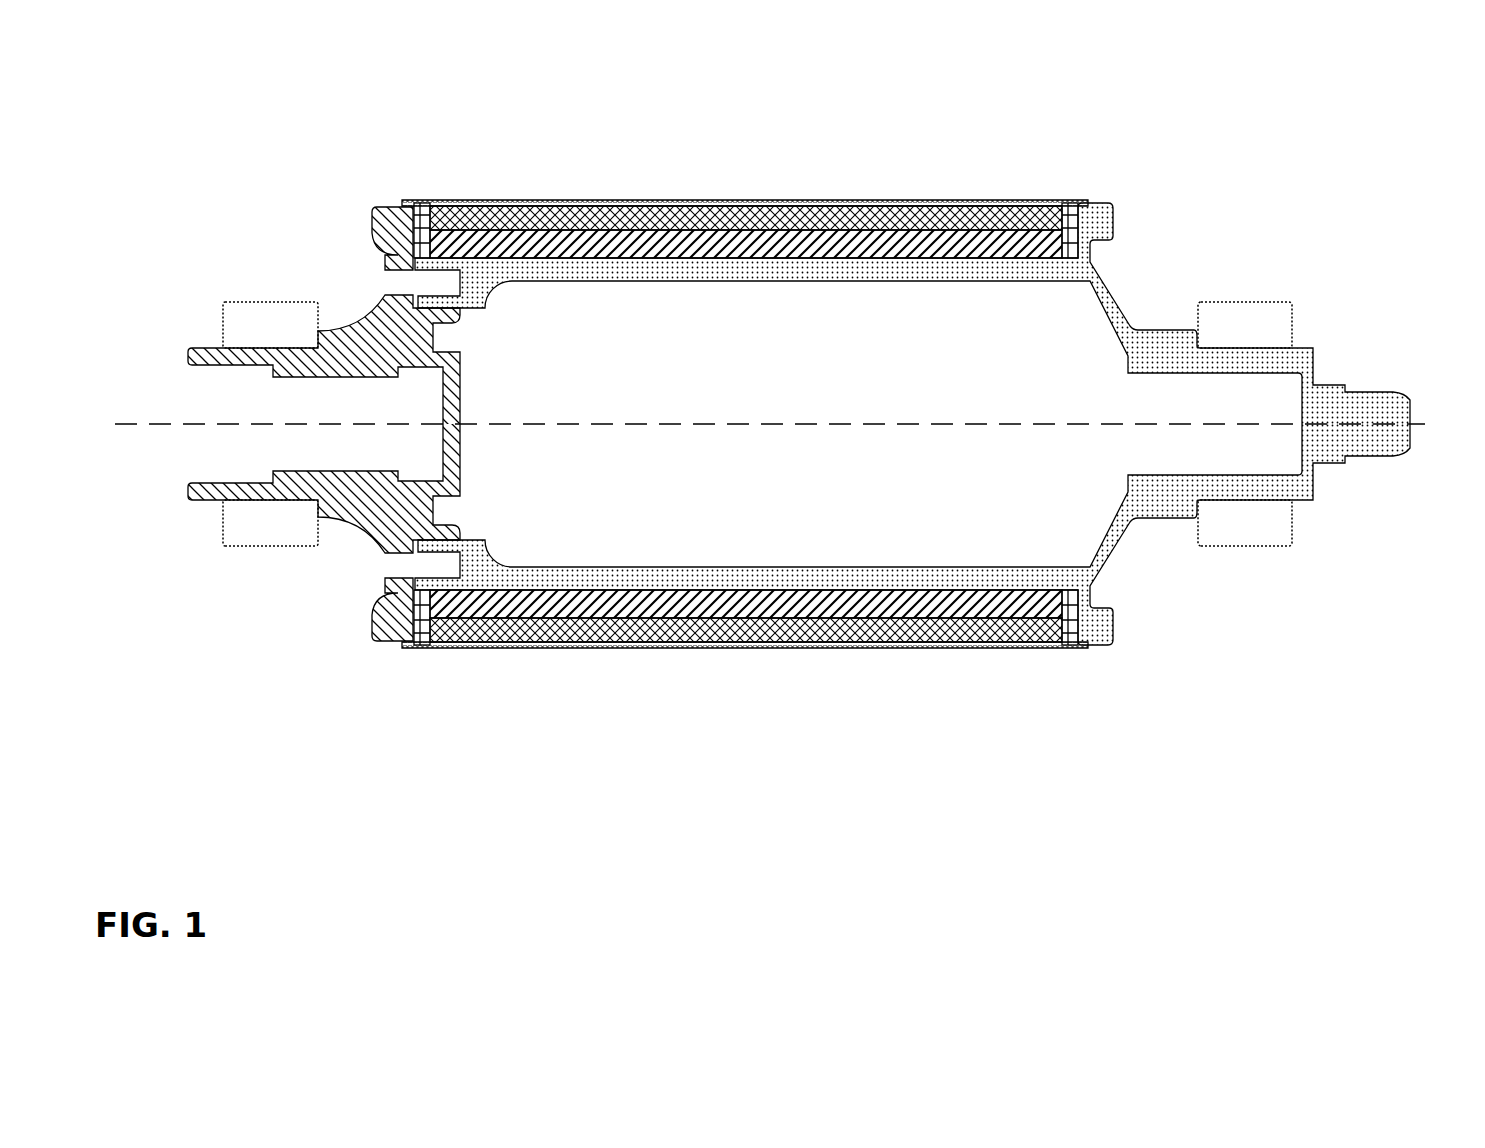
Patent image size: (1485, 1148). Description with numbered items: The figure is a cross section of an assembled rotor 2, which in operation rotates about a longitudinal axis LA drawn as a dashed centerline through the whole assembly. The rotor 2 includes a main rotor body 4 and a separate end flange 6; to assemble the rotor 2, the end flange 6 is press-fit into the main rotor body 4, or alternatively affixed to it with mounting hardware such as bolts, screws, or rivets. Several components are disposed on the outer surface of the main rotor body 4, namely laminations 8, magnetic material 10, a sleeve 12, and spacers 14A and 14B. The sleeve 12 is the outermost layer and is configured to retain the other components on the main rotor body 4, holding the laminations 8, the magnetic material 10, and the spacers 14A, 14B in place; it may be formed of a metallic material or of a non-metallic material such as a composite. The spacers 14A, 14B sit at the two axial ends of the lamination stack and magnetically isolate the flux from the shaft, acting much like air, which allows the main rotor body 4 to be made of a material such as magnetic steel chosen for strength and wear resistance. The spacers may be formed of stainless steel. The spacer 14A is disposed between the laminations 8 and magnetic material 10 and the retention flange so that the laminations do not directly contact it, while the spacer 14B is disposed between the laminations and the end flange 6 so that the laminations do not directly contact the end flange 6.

The rotor 2 is at (1402, 108).
The main rotor body 4 is at (1122, 315).
The end flange 6 is at (383, 237).
The laminations 8 is at (638, 243).
The magnetic material 10 is at (742, 220).
The sleeve 12 is at (858, 201).
The spacer 14A is at (1073, 204).
The spacer 14B is at (419, 210).
The longitudinal axis LA is at (205, 423).